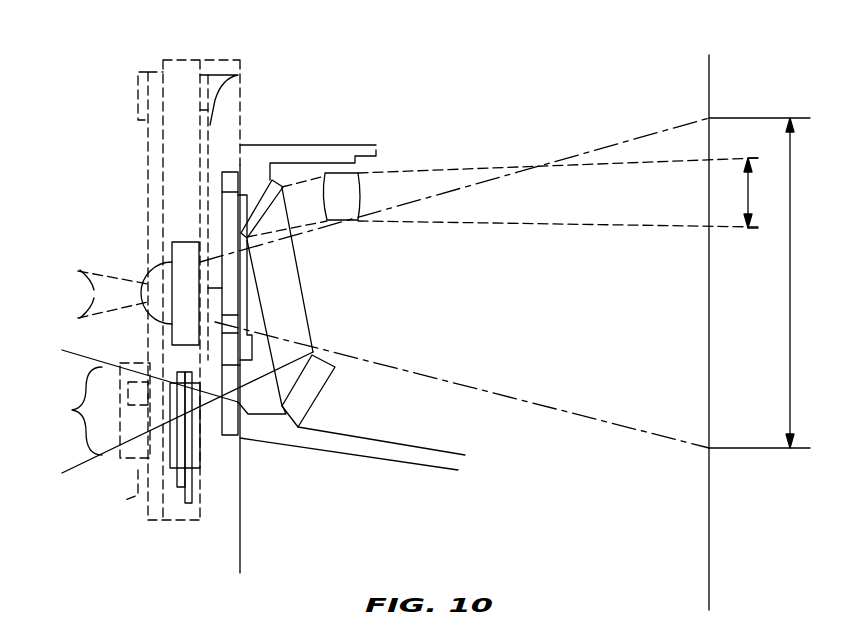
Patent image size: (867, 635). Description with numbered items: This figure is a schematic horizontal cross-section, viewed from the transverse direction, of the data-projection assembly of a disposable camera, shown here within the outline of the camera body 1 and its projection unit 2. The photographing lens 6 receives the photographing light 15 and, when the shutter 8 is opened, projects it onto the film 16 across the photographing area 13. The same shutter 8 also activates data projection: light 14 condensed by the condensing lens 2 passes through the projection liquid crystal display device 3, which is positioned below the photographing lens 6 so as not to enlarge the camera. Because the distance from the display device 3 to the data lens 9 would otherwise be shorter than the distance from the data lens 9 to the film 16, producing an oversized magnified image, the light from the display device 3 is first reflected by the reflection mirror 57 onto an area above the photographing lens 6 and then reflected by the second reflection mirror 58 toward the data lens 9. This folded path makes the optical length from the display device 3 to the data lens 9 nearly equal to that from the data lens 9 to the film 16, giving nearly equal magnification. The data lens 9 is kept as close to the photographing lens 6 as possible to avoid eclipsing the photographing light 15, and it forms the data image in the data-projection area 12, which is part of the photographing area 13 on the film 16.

The optical pickup housing 1 is at (178, 63).
The condensing lens 2 is at (118, 470).
The projection liquid crystal display device 3 is at (182, 503).
The photographing lens 6 is at (152, 265).
The shutter 8 is at (228, 172).
The data lens 9 is at (338, 188).
The data-projection area 12 is at (753, 200).
The photographing area 13 is at (790, 292).
The light 14 is at (72, 410).
The photographing light 15 is at (77, 283).
The film 16 is at (709, 547).
The reflection mirror 57 is at (292, 415).
The second reflection mirror 58 is at (283, 182).